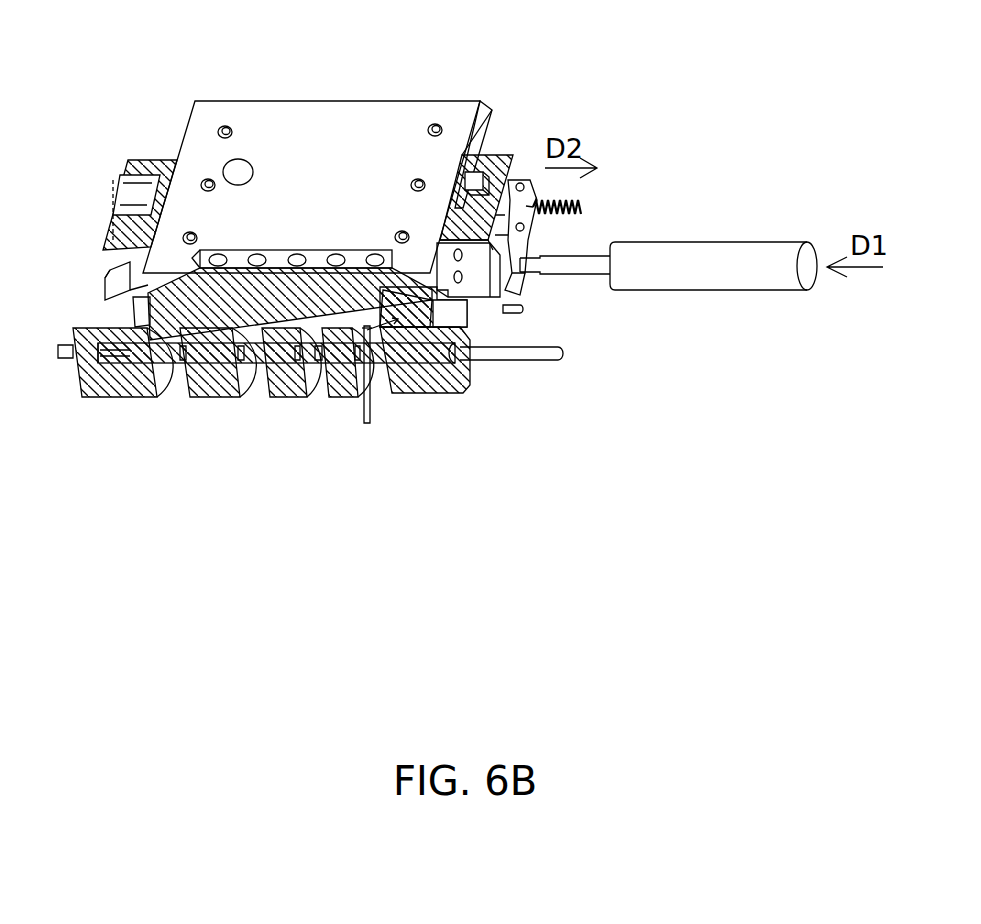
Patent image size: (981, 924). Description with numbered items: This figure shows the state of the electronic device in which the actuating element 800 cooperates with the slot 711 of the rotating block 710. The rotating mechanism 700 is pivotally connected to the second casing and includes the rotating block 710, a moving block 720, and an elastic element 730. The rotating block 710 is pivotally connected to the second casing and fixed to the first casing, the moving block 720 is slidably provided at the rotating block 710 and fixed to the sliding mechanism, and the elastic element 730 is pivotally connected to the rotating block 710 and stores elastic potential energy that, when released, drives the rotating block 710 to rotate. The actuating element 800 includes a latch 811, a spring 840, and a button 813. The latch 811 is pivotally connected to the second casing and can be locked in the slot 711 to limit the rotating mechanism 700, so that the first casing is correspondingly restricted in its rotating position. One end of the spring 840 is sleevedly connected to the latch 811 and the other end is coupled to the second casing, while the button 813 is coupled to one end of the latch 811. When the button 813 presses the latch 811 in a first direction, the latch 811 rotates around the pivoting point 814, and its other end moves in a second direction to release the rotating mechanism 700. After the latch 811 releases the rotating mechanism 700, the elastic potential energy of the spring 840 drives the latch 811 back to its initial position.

The rotating mechanism 700 is at (310, 377).
The rotating block 710 is at (137, 397).
The slot 711 is at (485, 101).
The moving block 720 is at (255, 228).
The elastic element 730 is at (372, 400).
The actuating element 800 is at (628, 278).
The latch 811 is at (513, 283).
The button 813 is at (665, 273).
The pivoting point 814 is at (523, 160).
The spring 840 is at (568, 216).